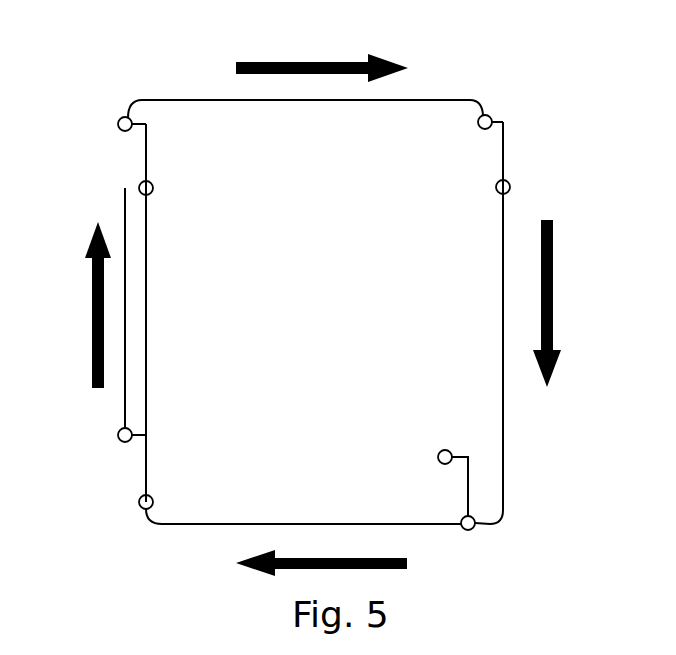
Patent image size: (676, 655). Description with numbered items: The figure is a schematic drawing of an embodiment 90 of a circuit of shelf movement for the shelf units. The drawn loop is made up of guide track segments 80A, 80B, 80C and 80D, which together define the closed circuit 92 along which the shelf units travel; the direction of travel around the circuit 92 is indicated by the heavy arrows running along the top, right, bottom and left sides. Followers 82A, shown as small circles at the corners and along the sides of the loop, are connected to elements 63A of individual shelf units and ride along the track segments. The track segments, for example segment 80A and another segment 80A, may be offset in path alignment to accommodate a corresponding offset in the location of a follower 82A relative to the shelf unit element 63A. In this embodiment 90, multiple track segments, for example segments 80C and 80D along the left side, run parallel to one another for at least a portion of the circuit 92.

The embodiment of a circuit of shelf movement 90 is at (456, 83).
The circuit 92 is at (240, 64).
The guide track segment 80A is at (296, 101).
The guide track segment 80B is at (502, 263).
The guide track segment 80C is at (147, 275).
The guide track segment 80D is at (122, 203).
The follower 82A is at (120, 120).
The shelf unit element 63A is at (148, 160).